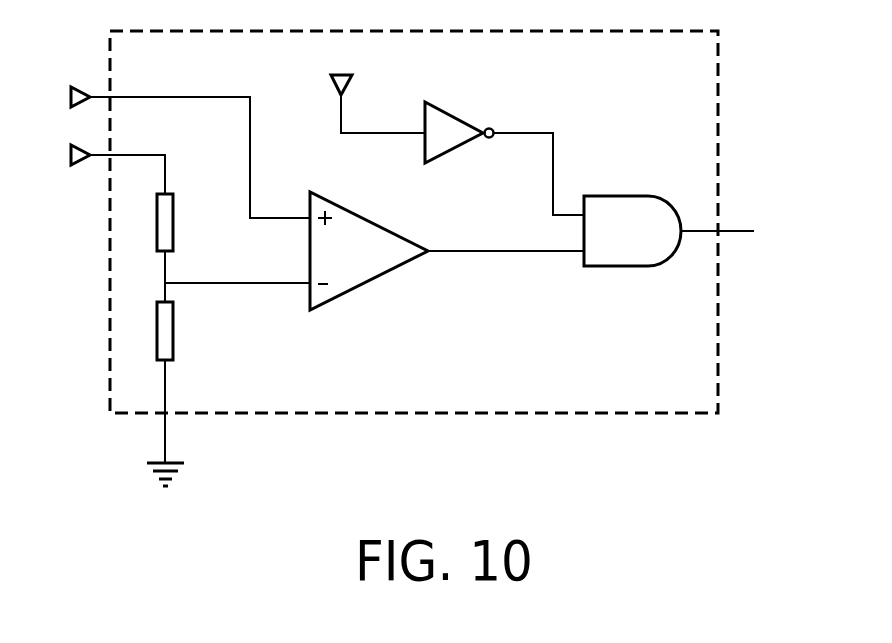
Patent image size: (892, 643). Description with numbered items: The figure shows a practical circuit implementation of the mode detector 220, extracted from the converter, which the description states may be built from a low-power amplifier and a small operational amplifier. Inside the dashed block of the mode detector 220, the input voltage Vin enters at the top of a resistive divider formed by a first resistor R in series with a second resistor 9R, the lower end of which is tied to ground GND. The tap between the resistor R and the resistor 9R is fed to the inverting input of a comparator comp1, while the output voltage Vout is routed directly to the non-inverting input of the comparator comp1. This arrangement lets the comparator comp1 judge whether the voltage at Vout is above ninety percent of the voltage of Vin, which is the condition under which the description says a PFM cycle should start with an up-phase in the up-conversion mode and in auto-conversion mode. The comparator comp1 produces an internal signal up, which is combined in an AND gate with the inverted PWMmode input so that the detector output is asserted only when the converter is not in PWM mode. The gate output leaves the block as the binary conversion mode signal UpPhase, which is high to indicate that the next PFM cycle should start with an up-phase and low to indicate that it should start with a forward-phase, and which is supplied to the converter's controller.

The mode detector 220 is at (678, 83).
The resistor R is at (154, 222).
The resistor 9R is at (147, 331).
The comparator comp1 is at (350, 270).
The ground GND is at (192, 460).
The output voltage Vout is at (162, 151).
The input voltage Vin is at (97, 168).
The PWM mode signal input PWMmode is at (352, 87).
The comparator output signal up is at (505, 235).
The UpPhase signal UpPhase is at (768, 234).